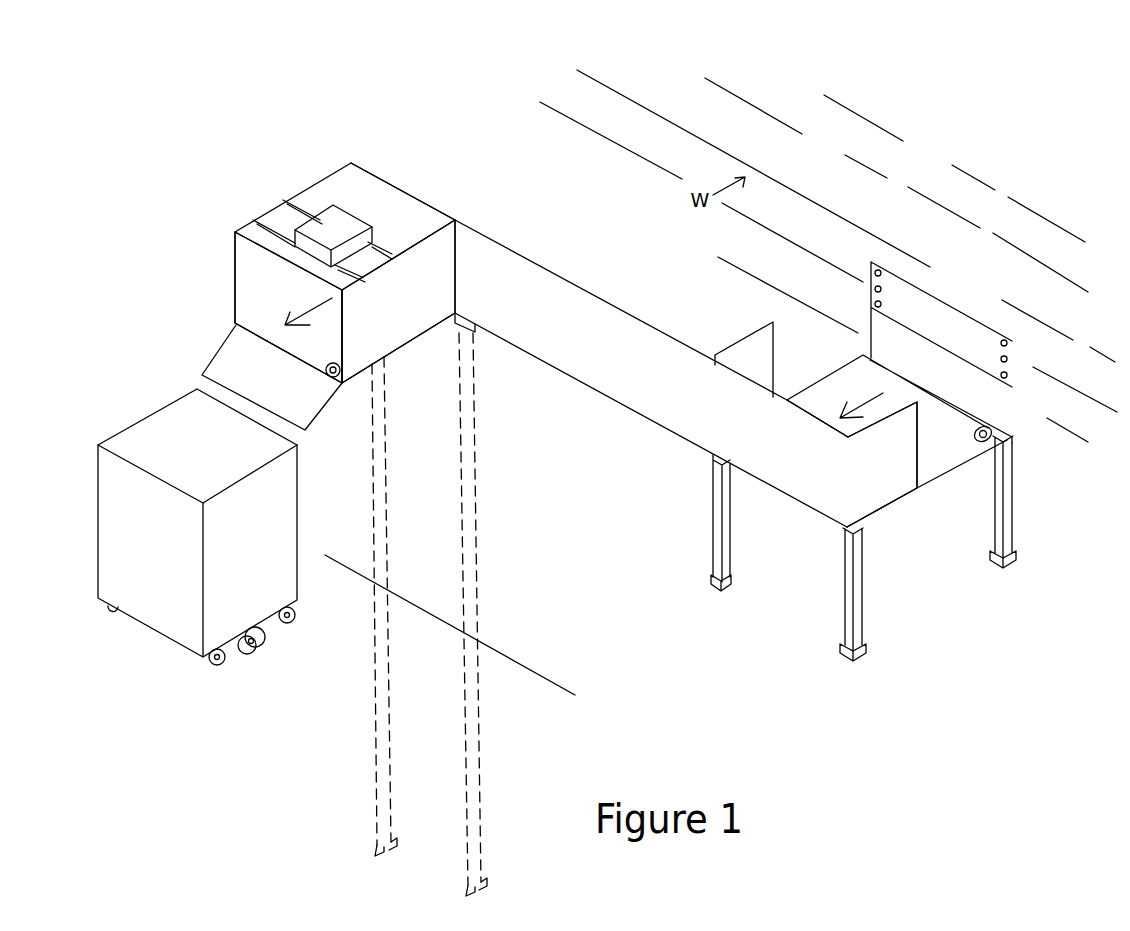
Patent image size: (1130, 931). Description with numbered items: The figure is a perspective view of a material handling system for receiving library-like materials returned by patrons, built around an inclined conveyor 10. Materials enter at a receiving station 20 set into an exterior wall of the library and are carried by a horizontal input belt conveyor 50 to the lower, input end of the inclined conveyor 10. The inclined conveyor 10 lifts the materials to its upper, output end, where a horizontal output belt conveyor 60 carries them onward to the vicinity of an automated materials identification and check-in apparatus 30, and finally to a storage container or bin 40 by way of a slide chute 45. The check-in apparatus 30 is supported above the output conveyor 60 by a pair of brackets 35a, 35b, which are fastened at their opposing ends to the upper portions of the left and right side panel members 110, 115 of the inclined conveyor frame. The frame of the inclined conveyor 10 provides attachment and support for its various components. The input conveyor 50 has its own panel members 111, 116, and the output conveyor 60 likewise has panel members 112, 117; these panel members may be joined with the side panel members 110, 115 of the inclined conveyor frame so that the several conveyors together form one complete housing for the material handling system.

The inclined conveyor 10 is at (577, 218).
The receiving station 20 is at (970, 317).
The automated materials identification and check-in apparatus 30 is at (340, 222).
The bracket 35a is at (262, 222).
The bracket 35b is at (294, 203).
The storage container or bin 40 is at (153, 429).
The slide chute 45 is at (230, 363).
The horizontal input belt conveyor 50 is at (938, 430).
The horizontal output belt conveyor 60 is at (295, 292).
The left side panel member 110 is at (600, 377).
The panel member 111 is at (893, 480).
The panel member 112 is at (413, 320).
The right side panel member 115 is at (408, 192).
The panel member 116 is at (750, 330).
The panel member 117 is at (242, 290).